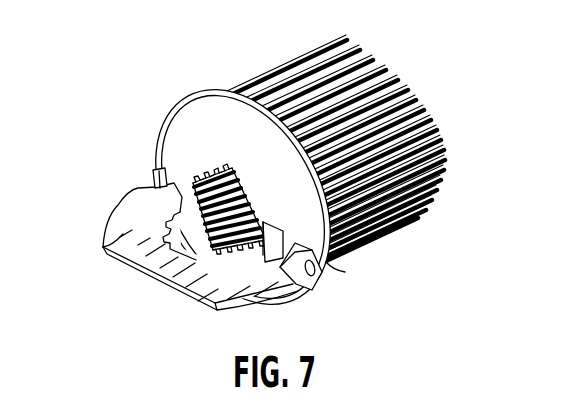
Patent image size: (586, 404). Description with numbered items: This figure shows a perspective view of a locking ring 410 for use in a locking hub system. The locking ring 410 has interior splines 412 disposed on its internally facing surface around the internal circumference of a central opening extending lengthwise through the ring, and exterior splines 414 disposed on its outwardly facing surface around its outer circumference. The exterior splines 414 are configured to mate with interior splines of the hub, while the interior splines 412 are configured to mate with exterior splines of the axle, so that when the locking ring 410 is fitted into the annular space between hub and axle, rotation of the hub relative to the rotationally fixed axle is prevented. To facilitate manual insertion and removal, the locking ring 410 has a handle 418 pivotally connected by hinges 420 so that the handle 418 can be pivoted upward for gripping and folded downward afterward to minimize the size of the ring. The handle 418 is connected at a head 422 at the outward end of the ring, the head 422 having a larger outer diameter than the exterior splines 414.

The locking ring 410 is at (212, 133).
The interior splines 412 is at (205, 167).
The exterior splines 414 is at (421, 221).
The handle 418 is at (103, 246).
The hinges 420 is at (152, 177).
The head 422 is at (340, 263).